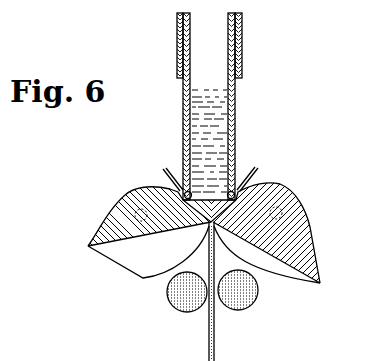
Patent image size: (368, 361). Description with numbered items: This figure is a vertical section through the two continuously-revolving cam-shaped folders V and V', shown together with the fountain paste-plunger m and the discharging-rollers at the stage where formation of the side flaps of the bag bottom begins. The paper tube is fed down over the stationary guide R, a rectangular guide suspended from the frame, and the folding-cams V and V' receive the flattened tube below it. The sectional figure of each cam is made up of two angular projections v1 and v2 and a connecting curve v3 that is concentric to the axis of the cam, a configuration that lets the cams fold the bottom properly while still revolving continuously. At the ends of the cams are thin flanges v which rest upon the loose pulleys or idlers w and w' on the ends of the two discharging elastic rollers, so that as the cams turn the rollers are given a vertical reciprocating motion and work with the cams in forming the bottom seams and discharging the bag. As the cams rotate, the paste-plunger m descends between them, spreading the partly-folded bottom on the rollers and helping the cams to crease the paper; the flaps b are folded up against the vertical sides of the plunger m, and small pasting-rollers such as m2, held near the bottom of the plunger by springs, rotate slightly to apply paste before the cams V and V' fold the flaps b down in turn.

The stationary guide R is at (244, 42).
The fountain paste-plunger m is at (235, 125).
The pasting-roller m2 is at (207, 178).
The flaps b is at (210, 178).
The folding-cam V is at (147, 215).
The folding-cam V' is at (269, 232).
The angular projection v1 is at (83, 244).
The angular projection v2 is at (324, 287).
The connecting curve v3 is at (215, 181).
The thin flanges v is at (189, 254).
The loose pulleys or idlers w is at (183, 297).
The loose pulley or idler w' is at (242, 294).